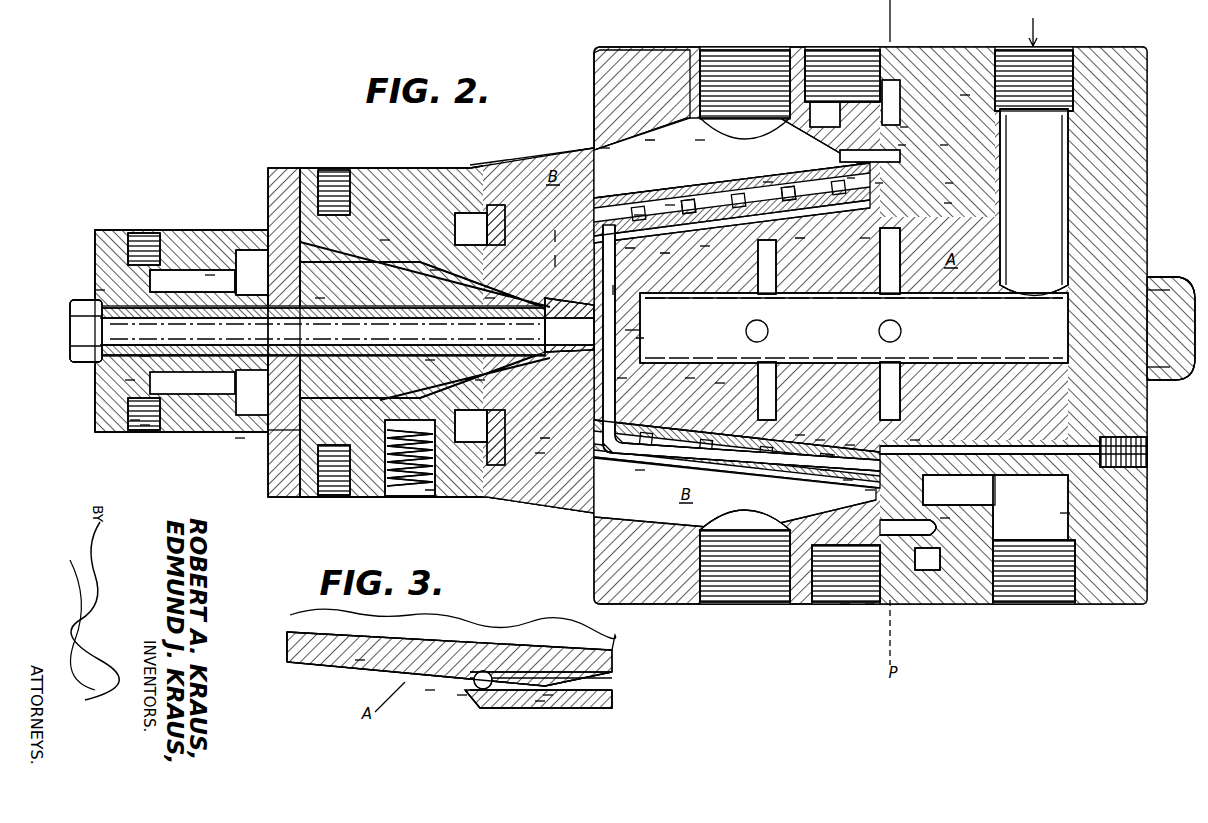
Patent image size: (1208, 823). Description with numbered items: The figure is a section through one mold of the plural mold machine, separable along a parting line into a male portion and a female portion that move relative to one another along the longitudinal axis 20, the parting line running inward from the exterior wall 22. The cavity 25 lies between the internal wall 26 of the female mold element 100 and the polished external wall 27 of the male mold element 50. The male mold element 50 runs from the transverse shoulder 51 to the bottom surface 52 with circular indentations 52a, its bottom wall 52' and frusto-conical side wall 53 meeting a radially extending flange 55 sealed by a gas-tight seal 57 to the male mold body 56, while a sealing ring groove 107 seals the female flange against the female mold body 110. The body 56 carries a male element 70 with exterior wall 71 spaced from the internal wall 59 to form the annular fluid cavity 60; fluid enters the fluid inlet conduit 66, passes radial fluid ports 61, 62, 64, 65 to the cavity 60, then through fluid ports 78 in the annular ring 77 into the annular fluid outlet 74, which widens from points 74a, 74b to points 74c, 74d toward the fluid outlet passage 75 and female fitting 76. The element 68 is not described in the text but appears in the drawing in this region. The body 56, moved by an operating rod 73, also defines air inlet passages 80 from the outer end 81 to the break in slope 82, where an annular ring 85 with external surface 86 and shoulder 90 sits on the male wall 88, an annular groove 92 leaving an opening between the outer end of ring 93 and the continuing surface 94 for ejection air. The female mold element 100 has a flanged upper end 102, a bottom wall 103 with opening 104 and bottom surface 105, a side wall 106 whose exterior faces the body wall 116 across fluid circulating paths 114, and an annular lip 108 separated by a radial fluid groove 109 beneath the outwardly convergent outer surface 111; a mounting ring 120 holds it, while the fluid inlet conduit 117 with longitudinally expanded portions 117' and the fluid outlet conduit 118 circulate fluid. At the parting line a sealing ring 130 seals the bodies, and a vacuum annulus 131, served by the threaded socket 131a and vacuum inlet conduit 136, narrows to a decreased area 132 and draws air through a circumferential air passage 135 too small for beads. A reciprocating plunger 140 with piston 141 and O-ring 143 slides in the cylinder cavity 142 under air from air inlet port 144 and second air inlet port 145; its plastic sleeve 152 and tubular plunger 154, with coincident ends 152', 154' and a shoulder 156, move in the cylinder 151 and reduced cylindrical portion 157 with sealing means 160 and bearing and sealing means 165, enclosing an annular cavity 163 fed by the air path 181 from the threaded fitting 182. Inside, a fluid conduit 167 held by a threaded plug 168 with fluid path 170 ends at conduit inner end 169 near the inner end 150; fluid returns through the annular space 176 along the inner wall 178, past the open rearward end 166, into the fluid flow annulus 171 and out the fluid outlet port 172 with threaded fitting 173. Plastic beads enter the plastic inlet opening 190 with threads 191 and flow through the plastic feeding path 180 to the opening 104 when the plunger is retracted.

In FIG. 2, the longitudinal axis 20 is at (1170, 330).
In FIG. 2, the exterior wall 22 is at (995, 55).
In FIG. 2, the mold cavity 25 is at (740, 195).
In FIG. 2, the internal wall 26 is at (690, 203).
In FIG. 2, the external wall 27 is at (705, 248).
In FIG. 3, the external wall 27 is at (360, 662).
In FIG. 2, the male mold element 50 is at (865, 240).
In FIG. 3, the male mold element 50 is at (615, 652).
In FIG. 2, the transverse shoulder 51 is at (950, 205).
In FIG. 2, the transverse bottom surface 52 is at (741, 348).
In FIG. 2, the circular indentations 52a is at (618, 290).
In FIG. 2, the bottom wall 52' is at (630, 387).
In FIG. 2, the frusto-conical side wall 53 is at (665, 255).
In FIG. 2, the radially extending flange 55 is at (905, 148).
In FIG. 2, the male mold body 56 is at (965, 95).
In FIG. 2, the gas-tight seal 57 is at (905, 130).
In FIG. 2, the internal wall 59 is at (762, 265).
In FIG. 2, the annular fluid cavity 60 is at (905, 235).
In FIG. 2, the radial fluid port 61 is at (895, 292).
In FIG. 2, the radial fluid port 62 is at (770, 295).
In FIG. 2, the radial fluid port 64 is at (768, 375).
In FIG. 2, the radial fluid port 65 is at (890, 375).
In FIG. 2, the fluid inlet conduit 66 is at (1028, 341).
In FIG. 2, the bracket 68 is at (640, 330).
In FIG. 2, the male element 70 is at (690, 380).
In FIG. 2, the exterior wall 71 is at (720, 385).
In FIG. 2, the operating rod 73 is at (1165, 277).
In FIG. 2, the annular fluid outlet 74 is at (945, 520).
In FIG. 2, the annulus upper width point 74a is at (945, 145).
In FIG. 2, the annulus upper width point 74b is at (1005, 150).
In FIG. 2, the annulus lower width point 74c is at (920, 552).
In FIG. 2, the annulus lower width point 74d is at (1065, 515).
In FIG. 2, the fluid outlet passage 75 is at (1034, 515).
In FIG. 2, the female fitting 76 is at (1045, 606).
In FIG. 2, the annular ring 77 is at (960, 490).
In FIG. 2, the fluid ports 78 is at (950, 185).
In FIG. 2, the air inlet passages 80 is at (1075, 456).
In FIG. 3, the air inlet passages 80 is at (615, 680).
In FIG. 2, the outer end 81 is at (1147, 540).
In FIG. 2, the break in slope 82 is at (830, 455).
In FIG. 3, the break in slope 82 is at (462, 697).
In FIG. 2, the annular ring 85 is at (825, 472).
In FIG. 3, the annular ring 85 is at (540, 703).
In FIG. 2, the external surface 86 is at (848, 482).
In FIG. 3, the external surface 86 is at (548, 697).
In FIG. 2, the male wall 88 is at (870, 492).
In FIG. 3, the male wall 88 is at (592, 710).
In FIG. 2, the shoulder 90 is at (850, 445).
In FIG. 3, the shoulder 90 is at (615, 698).
In FIG. 2, the annular groove 92 is at (820, 440).
In FIG. 3, the annular groove 92 is at (488, 690).
In FIG. 2, the outer end of ring 93 is at (800, 435).
In FIG. 3, the outer end of ring 93 is at (475, 692).
In FIG. 2, the continuing surface 94 is at (640, 470).
In FIG. 3, the continuing surface 94 is at (430, 692).
In FIG. 2, the female mold element 100 is at (640, 215).
In FIG. 2, the flanged upper end 102 is at (850, 180).
In FIG. 2, the bottom wall 103 is at (605, 150).
In FIG. 2, the opening 104 is at (555, 345).
In FIG. 2, the bottom surface 105 is at (650, 140).
In FIG. 2, the side wall 106 is at (790, 192).
In FIG. 2, the sealing ring groove 107 is at (880, 185).
In FIG. 2, the annular lip 108 is at (530, 157).
In FIG. 2, the radial fluid groove 109 is at (555, 238).
In FIG. 2, the female mold body 110 is at (660, 50).
In FIG. 2, the outwardly convergent outer surface 111 is at (555, 262).
In FIG. 2, the fluid circulating paths 114 is at (768, 182).
In FIG. 2, the body wall 116 is at (670, 205).
In FIG. 2, the fluid inlet conduit 117 is at (745, 65).
In FIG. 2, the longitudinally expanded portions 117' is at (684, 125).
In FIG. 2, the fluid outlet conduit 118 is at (750, 606).
In FIG. 2, the mounting ring 120 is at (470, 445).
In FIG. 2, the sealing ring 130 is at (870, 606).
In FIG. 2, the vacuum annulus 131 is at (845, 606).
In FIG. 2, the threaded socket 131a is at (822, 60).
In FIG. 2, the decreased area 132 is at (880, 507).
In FIG. 2, the circumferential air passage 135 is at (915, 440).
In FIG. 2, the vacuum inlet conduit 136 is at (830, 606).
In FIG. 2, the reciprocating plunger 140 is at (240, 440).
In FIG. 2, the piston 141 is at (235, 260).
In FIG. 2, the cylinder cavity 142 is at (278, 230).
In FIG. 2, the O-ring 143 is at (285, 430).
In FIG. 2, the air inlet port 144 is at (180, 275).
In FIG. 2, the second air inlet port 145 is at (330, 492).
In FIG. 2, the inner end 150 is at (547, 305).
In FIG. 2, the cylinder 151 is at (375, 302).
In FIG. 2, the plastic sleeve 152 is at (219, 209).
In FIG. 2, the sleeve end 152' is at (119, 205).
In FIG. 2, the tubular plunger 154 is at (309, 280).
In FIG. 2, the plunger end 154' is at (275, 245).
In FIG. 2, the shoulder 156 is at (435, 270).
In FIG. 2, the reduced cylindrical portion 157 is at (490, 300).
In FIG. 2, the sealing means 160 is at (540, 455).
In FIG. 2, the annular cavity 163 is at (430, 362).
In FIG. 2, the bearing and sealing means 165 is at (345, 310).
In FIG. 2, the open rearward end 166 is at (130, 382).
In FIG. 2, the fluid conduit 167 is at (145, 358).
In FIG. 2, the threaded plug 168 is at (100, 292).
In FIG. 2, the conduit inner end 169 is at (480, 382).
In FIG. 2, the fluid path 170 is at (72, 345).
In FIG. 2, the fluid flow annulus 171 is at (110, 407).
In FIG. 2, the fluid outlet port 172 is at (135, 422).
In FIG. 2, the threaded fitting 173 is at (145, 427).
In FIG. 2, the annular space 176 is at (200, 396).
In FIG. 2, the inner wall 178 is at (160, 240).
In FIG. 2, the plastic feeding path 180 is at (395, 470).
In FIG. 2, the air path 181 is at (385, 240).
In FIG. 2, the threaded fitting 182 is at (335, 170).
In FIG. 2, the plastic inlet opening 190 is at (410, 452).
In FIG. 2, the threads 191 is at (545, 440).